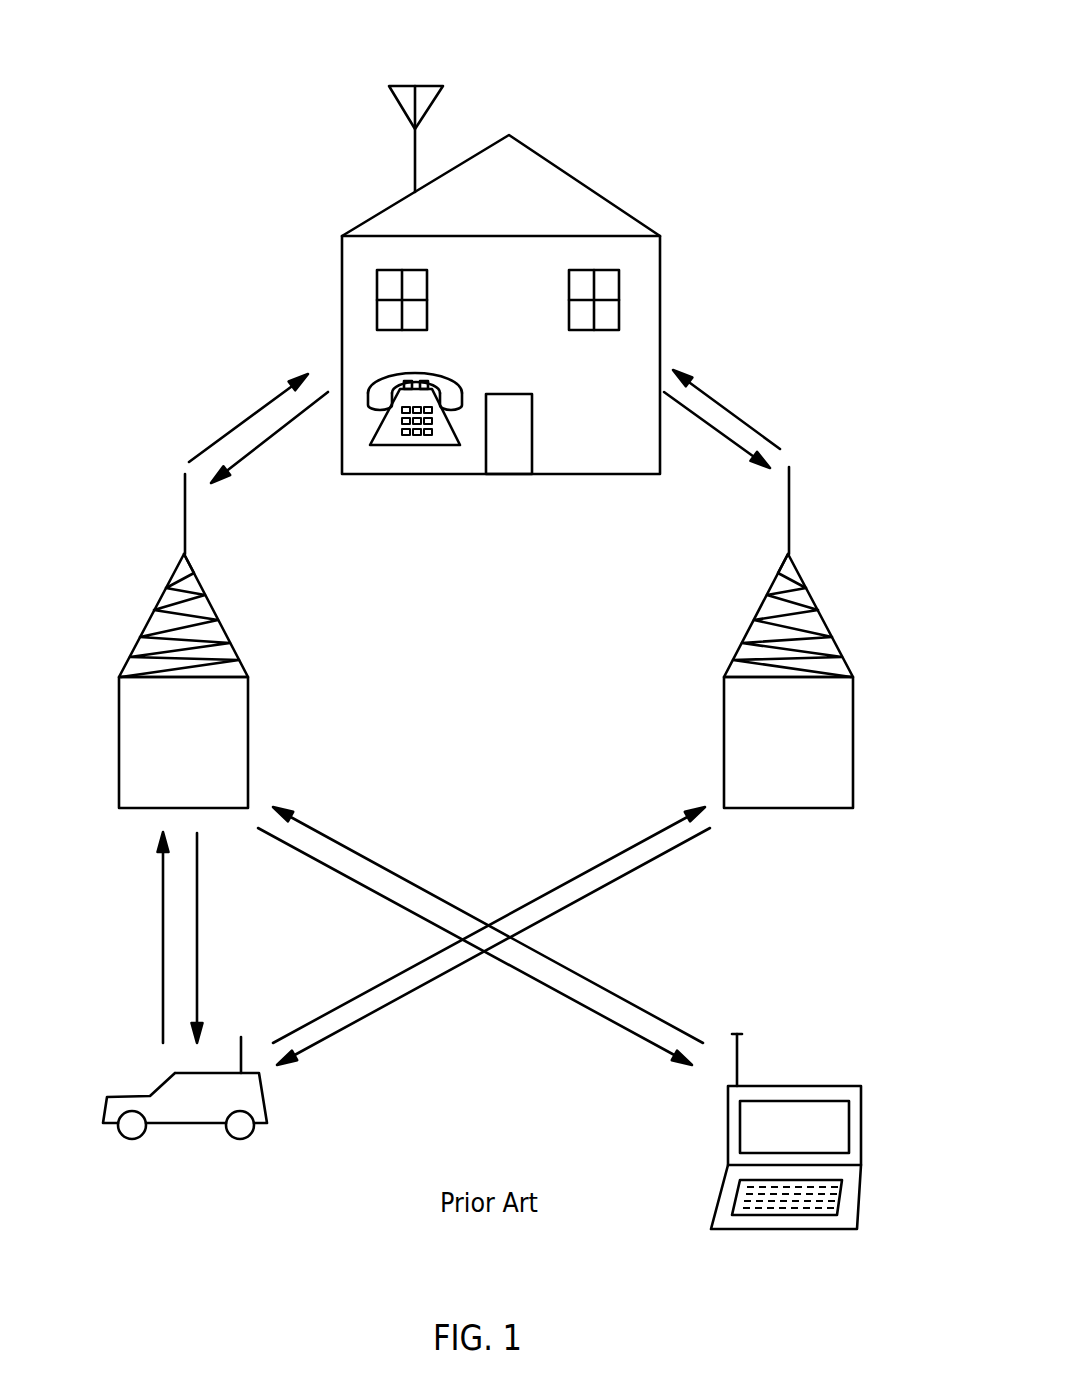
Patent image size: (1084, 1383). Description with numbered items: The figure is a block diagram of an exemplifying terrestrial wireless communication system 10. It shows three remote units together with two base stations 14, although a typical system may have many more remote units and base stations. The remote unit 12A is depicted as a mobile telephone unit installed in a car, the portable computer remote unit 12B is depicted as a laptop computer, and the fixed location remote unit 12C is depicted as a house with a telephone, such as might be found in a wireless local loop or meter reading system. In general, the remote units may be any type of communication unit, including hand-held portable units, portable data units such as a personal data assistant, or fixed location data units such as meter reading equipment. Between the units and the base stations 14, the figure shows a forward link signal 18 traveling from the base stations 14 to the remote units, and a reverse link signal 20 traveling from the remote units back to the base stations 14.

The terrestrial wireless communication system 10 is at (737, 26).
The remote unit 12A is at (130, 1096).
The portable computer remote unit 12B is at (836, 1086).
The fixed location remote unit 12C is at (585, 186).
The base station 14 is at (152, 611).
The forward link signal 18 is at (263, 404).
The reverse link signal 20 is at (281, 430).